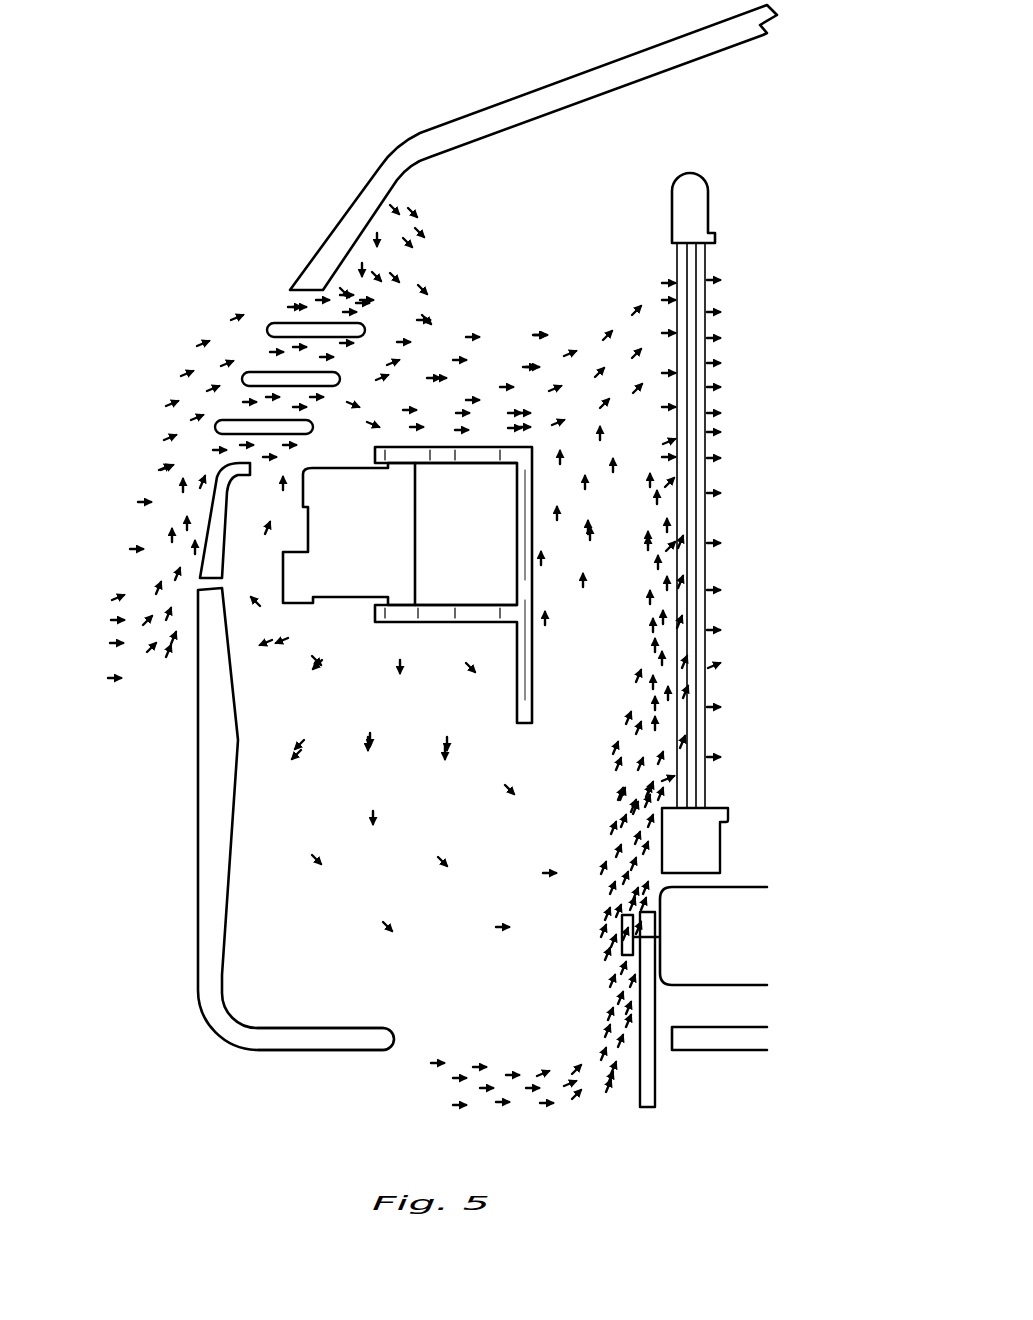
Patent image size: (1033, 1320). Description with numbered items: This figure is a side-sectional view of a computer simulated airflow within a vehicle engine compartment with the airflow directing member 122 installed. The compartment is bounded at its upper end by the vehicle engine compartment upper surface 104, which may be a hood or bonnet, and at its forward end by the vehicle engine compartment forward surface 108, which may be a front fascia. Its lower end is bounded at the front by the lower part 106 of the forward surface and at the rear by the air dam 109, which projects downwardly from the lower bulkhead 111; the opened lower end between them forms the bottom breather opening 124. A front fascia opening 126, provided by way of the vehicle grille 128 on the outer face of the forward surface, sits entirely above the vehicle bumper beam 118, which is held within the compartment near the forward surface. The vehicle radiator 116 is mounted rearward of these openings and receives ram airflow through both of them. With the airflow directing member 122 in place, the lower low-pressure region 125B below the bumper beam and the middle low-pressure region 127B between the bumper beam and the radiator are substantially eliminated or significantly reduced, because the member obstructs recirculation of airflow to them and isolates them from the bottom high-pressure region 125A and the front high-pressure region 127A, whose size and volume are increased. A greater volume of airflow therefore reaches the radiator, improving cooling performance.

The vehicle engine compartment upper surface 104 is at (557, 70).
The lower part of the forward surface 106 is at (362, 1043).
The vehicle engine compartment forward surface 108 is at (208, 860).
The air dam 109 is at (650, 1080).
The lower bulkhead 111 is at (718, 925).
The vehicle radiator 116 is at (690, 202).
The vehicle bumper beam 118 is at (370, 554).
The airflow directing member 122 is at (457, 630).
The bottom breather opening 124 is at (617, 1090).
The bottom high-pressure region 125A is at (603, 795).
The lower low-pressure region 125B is at (375, 690).
The front fascia opening 126 is at (272, 308).
The front high-pressure region 127A is at (456, 376).
The middle low-pressure region 127B is at (617, 540).
The vehicle grille 128 is at (280, 332).